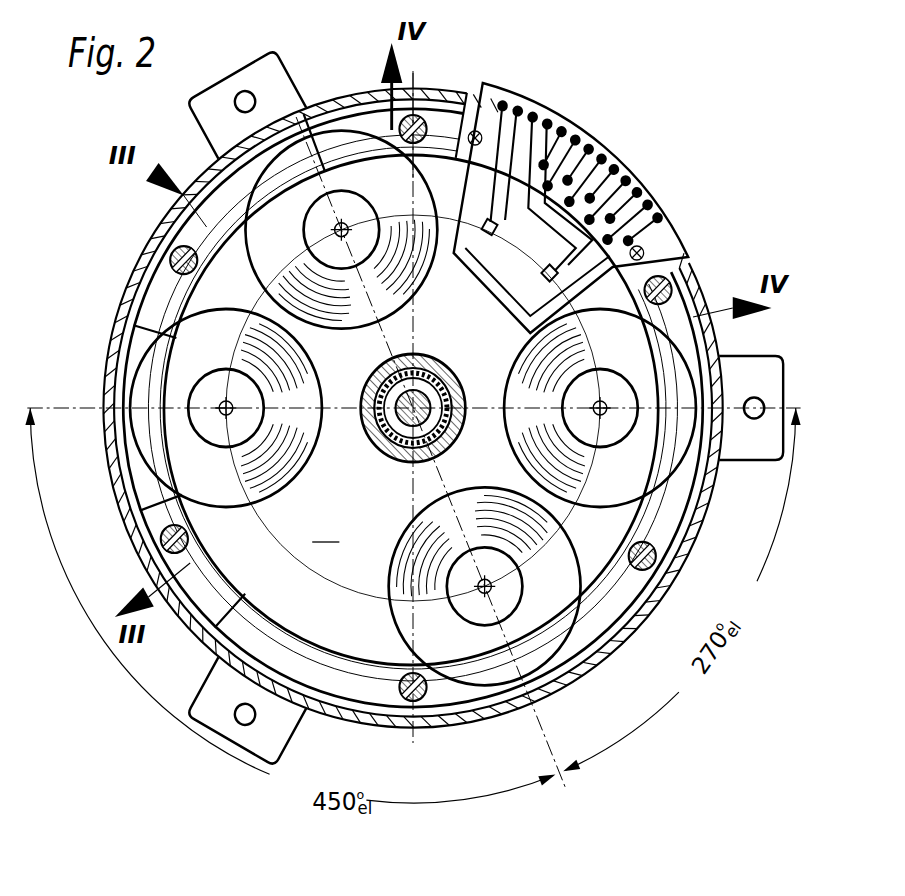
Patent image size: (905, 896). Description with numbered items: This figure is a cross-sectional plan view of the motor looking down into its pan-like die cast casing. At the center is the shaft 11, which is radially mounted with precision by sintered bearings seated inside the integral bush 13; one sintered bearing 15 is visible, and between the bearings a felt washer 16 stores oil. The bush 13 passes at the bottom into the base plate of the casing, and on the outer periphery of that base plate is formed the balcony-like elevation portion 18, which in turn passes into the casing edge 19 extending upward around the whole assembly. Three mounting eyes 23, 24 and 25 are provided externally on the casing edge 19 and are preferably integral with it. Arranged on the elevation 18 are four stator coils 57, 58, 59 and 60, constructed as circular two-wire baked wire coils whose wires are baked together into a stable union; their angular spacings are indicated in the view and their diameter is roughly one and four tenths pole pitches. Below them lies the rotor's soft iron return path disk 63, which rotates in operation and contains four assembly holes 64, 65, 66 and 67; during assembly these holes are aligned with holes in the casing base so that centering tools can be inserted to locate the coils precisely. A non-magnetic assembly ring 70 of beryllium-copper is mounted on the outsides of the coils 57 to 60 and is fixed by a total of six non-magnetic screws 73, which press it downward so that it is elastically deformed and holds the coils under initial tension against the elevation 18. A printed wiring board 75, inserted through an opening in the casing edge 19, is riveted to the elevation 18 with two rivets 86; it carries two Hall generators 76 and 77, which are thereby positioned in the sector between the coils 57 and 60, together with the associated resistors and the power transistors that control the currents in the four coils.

The shaft 11 is at (449, 385).
The bush 13 is at (425, 384).
The sintered bearing 15 is at (413, 390).
The felt washer 16 is at (443, 408).
The balcony-like elevation portion 18 is at (434, 448).
The casing edge 19 is at (392, 408).
The mounting eye 23 is at (764, 402).
The mounting eye 24 is at (251, 92).
The mounting eye 25 is at (246, 739).
The stator coil 57 is at (587, 408).
The stator coil 58 is at (485, 572).
The stator coil 59 is at (240, 408).
The stator coil 60 is at (341, 251).
The soft iron return path disk 63 is at (327, 530).
The assembly hole 64 is at (615, 419).
The assembly hole 65 is at (501, 593).
The assembly hole 66 is at (235, 424).
The assembly hole 67 is at (348, 219).
The assembly ring 70 is at (406, 387).
The non-magnetic screw 73 is at (417, 412).
The printed wiring board 75 is at (592, 208).
The Hall generator 76 is at (506, 234).
The Hall generator 77 is at (538, 265).
The rivet 86 is at (583, 159).